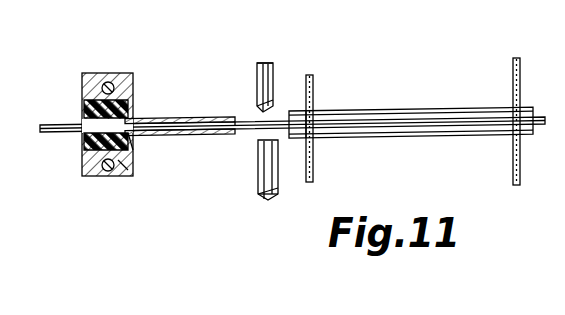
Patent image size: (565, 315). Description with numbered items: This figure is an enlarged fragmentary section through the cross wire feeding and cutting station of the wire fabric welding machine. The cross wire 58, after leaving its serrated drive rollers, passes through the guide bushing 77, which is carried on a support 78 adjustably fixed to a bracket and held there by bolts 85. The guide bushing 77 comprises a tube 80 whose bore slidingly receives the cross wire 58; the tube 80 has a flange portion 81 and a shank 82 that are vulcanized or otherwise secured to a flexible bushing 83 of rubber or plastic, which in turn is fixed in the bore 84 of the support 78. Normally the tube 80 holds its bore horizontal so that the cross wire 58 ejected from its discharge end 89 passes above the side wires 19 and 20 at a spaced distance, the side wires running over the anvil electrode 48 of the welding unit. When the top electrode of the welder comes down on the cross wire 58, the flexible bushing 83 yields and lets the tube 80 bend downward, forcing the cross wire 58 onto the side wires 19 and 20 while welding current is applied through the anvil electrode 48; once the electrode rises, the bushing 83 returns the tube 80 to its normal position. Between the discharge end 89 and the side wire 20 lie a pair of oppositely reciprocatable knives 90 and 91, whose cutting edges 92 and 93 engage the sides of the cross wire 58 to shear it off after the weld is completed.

The side wire 19 is at (513, 70).
The side wire 20 is at (314, 94).
The anvil electrode 48 is at (403, 132).
The cross wire 58 is at (45, 132).
The guide bushing 77 is at (184, 137).
The support 78 is at (125, 164).
The tube 80 is at (167, 118).
The flange portion 81 is at (132, 140).
The shank 82 is at (90, 103).
The flexible bushing 83 is at (102, 168).
The bore 84 is at (133, 95).
The bolts 85 is at (112, 76).
The discharge end 89 is at (246, 129).
The knife 90 is at (266, 62).
The knife 91 is at (264, 202).
The cutting edge 92 is at (256, 112).
The cutting edge 93 is at (258, 144).